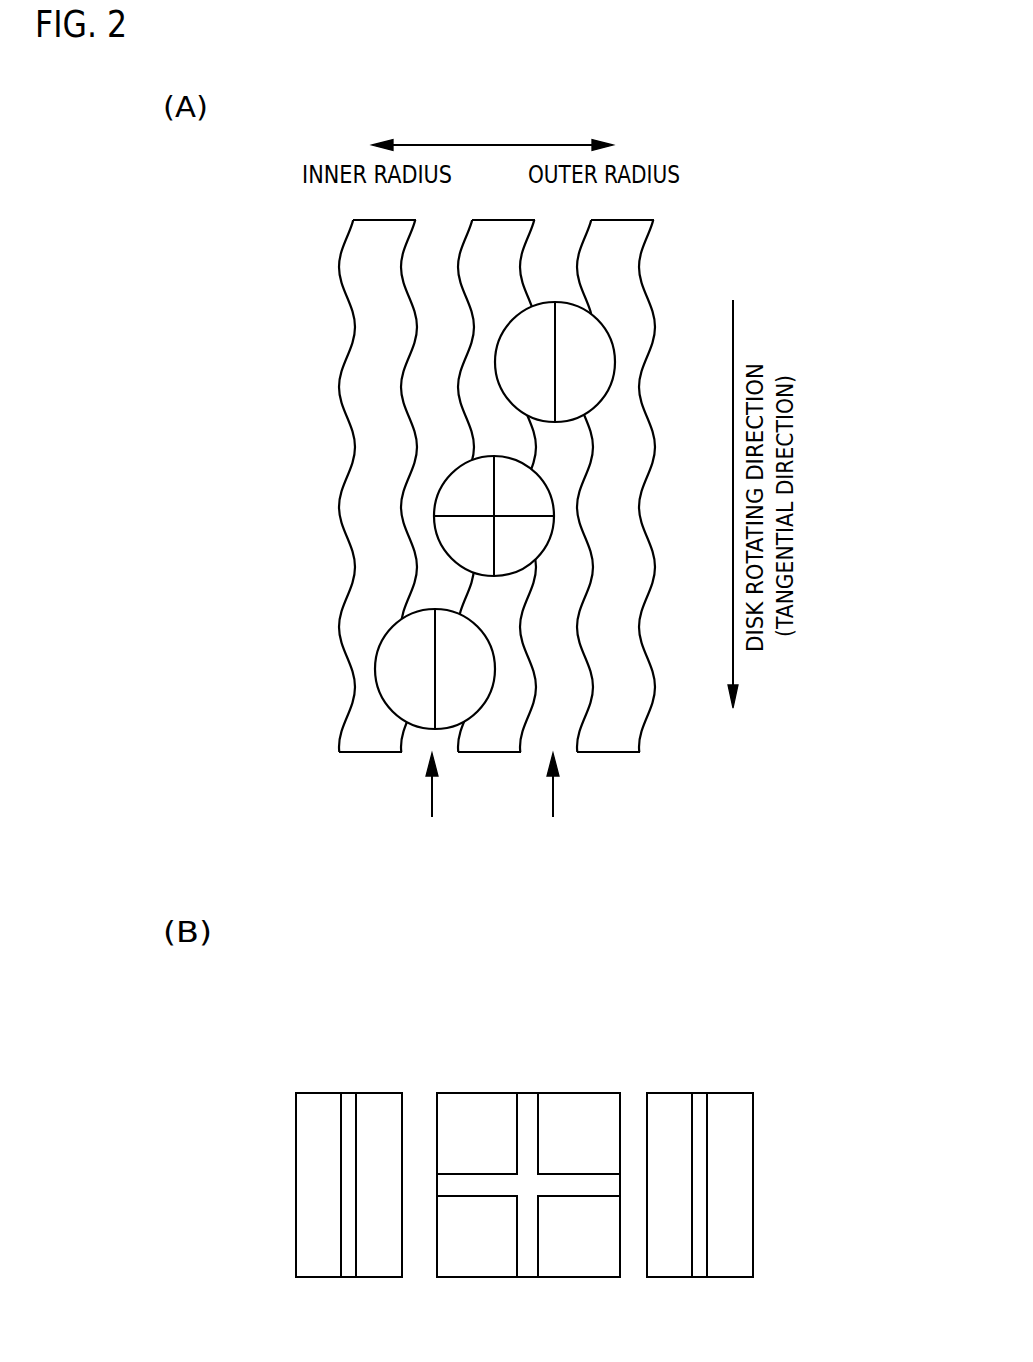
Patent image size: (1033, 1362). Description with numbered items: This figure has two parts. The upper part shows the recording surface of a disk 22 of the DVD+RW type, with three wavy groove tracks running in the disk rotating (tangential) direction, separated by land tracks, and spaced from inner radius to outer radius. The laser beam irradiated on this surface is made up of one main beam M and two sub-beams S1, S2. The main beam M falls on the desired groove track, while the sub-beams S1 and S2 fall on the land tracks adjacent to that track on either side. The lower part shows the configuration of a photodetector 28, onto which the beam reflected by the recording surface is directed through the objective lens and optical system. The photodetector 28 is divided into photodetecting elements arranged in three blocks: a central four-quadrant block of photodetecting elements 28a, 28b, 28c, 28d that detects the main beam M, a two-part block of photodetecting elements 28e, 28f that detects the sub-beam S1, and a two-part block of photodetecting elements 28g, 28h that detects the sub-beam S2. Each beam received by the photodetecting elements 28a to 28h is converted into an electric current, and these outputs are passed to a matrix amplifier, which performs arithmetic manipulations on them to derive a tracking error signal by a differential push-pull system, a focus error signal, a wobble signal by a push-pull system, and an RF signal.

The disk 22 is at (244, 326).
The sub-beam S1 is at (607, 362).
The sub-beam S2 is at (385, 670).
The main beam M is at (533, 555).
The photodetector 28 is at (338, 984).
The photodetecting element 28a is at (477, 1092).
The photodetecting element 28b is at (480, 1278).
The photodetecting element 28c is at (572, 1278).
The photodetecting element 28d is at (565, 1092).
The photodetecting element 28e is at (663, 1092).
The photodetecting element 28f is at (722, 1278).
The photodetecting element 28g is at (387, 1278).
The photodetecting element 28h is at (326, 1092).